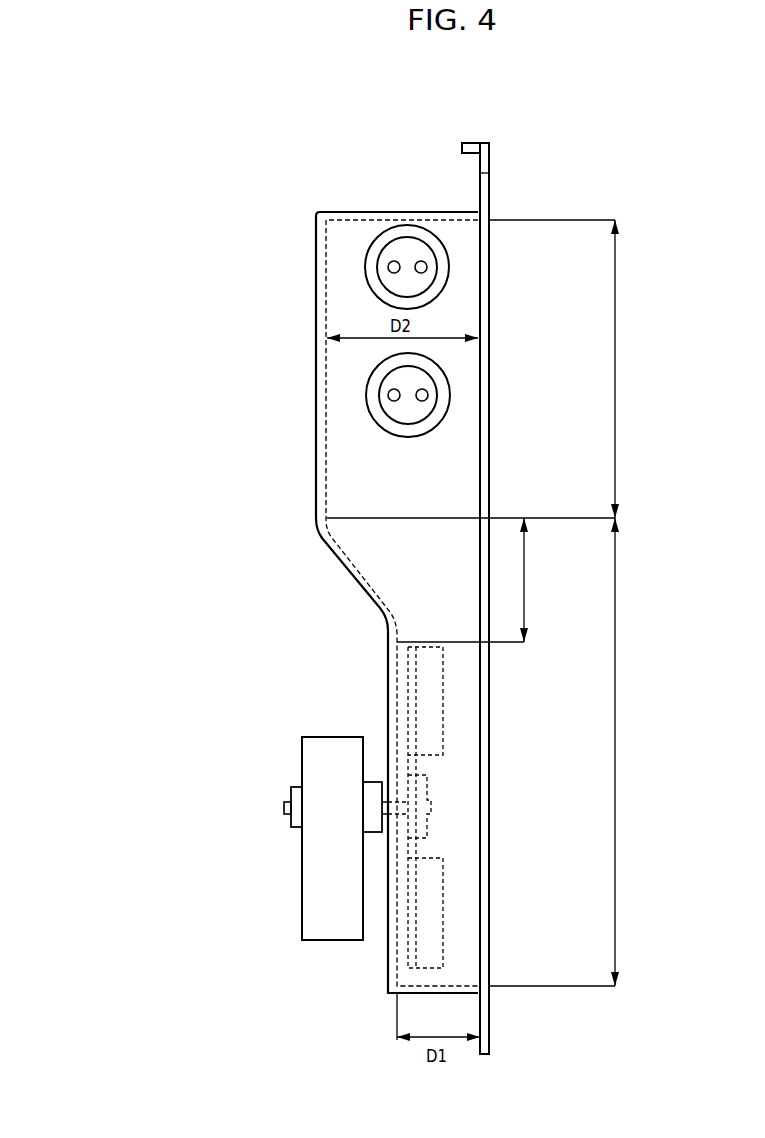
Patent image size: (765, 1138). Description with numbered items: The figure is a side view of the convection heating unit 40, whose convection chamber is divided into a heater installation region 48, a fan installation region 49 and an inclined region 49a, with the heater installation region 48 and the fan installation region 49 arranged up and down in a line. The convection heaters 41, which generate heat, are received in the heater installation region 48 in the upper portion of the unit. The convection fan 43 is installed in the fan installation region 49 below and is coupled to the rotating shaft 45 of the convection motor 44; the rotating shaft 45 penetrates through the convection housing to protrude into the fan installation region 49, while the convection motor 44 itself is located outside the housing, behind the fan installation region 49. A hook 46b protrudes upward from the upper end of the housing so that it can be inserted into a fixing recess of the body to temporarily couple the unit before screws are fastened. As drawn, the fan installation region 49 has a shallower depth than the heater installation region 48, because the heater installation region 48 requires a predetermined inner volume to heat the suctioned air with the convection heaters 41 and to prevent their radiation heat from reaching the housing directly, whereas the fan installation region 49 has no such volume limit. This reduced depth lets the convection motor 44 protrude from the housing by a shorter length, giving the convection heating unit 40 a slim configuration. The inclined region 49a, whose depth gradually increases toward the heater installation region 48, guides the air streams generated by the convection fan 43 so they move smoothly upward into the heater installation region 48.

The convection heating unit 40 is at (72, 104).
The convection heater 41 is at (400, 247).
The convection fan 43 is at (437, 900).
The convection motor 44 is at (312, 752).
The rotating shaft 45 is at (400, 805).
The hook 46b is at (486, 148).
The heater installation region 48 is at (618, 370).
The fan installation region 49 is at (618, 752).
The inclined region 49a is at (527, 594).